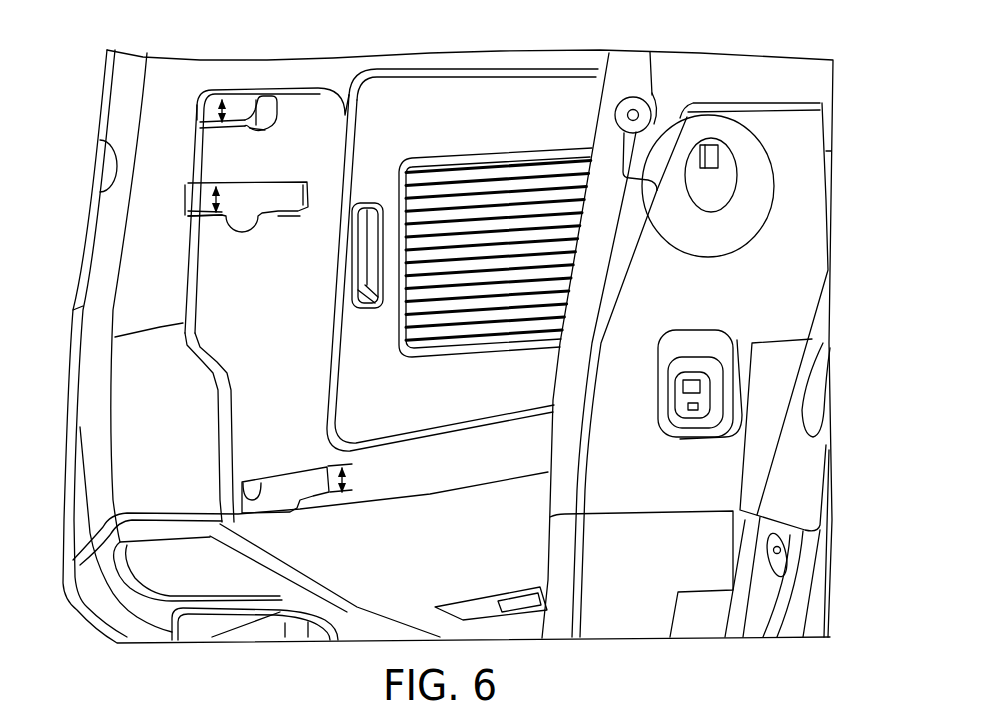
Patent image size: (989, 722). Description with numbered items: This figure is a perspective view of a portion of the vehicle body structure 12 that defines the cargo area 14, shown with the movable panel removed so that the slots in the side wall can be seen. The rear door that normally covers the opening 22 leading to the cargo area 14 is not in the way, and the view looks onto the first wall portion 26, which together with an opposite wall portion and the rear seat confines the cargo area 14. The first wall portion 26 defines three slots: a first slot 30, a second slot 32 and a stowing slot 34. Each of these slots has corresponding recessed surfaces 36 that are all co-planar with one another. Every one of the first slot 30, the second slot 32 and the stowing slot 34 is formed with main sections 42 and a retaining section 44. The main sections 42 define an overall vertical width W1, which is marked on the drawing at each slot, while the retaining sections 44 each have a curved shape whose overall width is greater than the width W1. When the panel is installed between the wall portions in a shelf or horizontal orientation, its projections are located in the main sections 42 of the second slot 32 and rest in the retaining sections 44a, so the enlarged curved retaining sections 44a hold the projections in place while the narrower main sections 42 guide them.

The vehicle body structure 12 is at (97, 118).
The cargo area 14 is at (500, 532).
The opening 22 is at (98, 190).
The first wall portion 26 is at (317, 117).
The first slot 30 is at (258, 107).
The second slot 32 is at (292, 212).
The stowing slot 34 is at (307, 487).
The recessed surfaces 36 is at (262, 116).
The main sections 42 is at (205, 124).
The retaining section 44 is at (257, 132).
The retaining sections 44a is at (207, 220).
The overall vertical width W1 is at (377, 513).